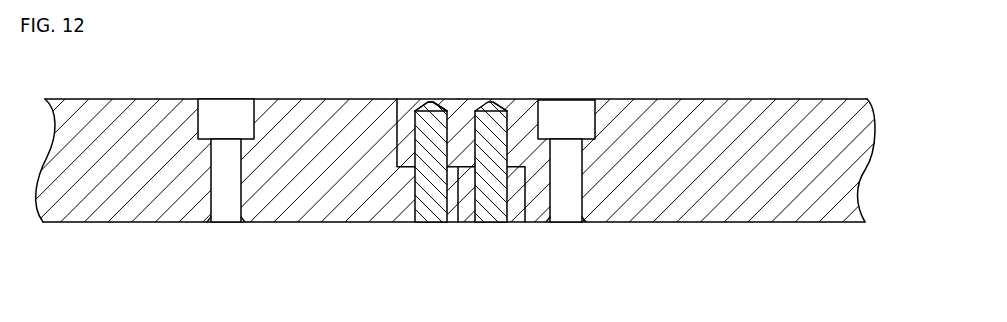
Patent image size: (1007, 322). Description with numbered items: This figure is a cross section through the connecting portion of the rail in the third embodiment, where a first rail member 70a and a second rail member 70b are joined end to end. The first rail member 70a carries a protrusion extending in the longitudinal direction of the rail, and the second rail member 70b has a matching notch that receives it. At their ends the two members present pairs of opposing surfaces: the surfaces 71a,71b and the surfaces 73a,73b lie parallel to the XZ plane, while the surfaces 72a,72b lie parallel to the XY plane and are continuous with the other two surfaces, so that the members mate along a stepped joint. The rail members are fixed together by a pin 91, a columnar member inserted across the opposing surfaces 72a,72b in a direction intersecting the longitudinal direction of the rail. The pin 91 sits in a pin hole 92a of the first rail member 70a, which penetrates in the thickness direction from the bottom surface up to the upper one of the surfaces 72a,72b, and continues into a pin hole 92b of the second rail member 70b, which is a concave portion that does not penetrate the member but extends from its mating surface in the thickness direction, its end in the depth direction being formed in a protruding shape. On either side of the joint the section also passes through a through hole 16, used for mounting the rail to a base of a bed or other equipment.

The through hole 16 is at (565, 112).
The first rail member 70a is at (333, 172).
The second rail member 70b is at (680, 173).
The surfaces parallel to the XZ plane 71a,71b is at (392, 120).
The surfaces parallel to the XY plane 72a,72b is at (459, 170).
The surfaces parallel to the XZ plane 73a,73b is at (527, 185).
The pin 91 is at (432, 214).
The pin hole 92a is at (422, 188).
The pin hole 92b is at (428, 102).